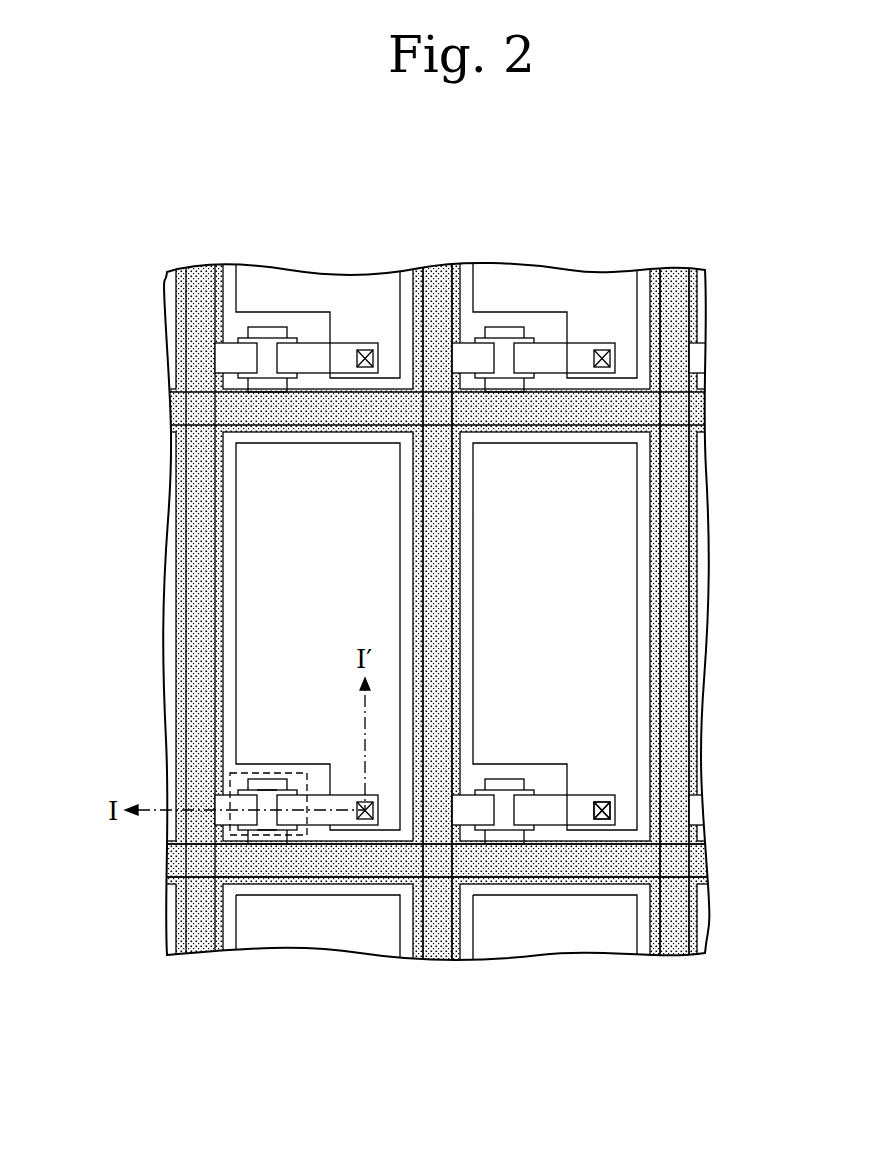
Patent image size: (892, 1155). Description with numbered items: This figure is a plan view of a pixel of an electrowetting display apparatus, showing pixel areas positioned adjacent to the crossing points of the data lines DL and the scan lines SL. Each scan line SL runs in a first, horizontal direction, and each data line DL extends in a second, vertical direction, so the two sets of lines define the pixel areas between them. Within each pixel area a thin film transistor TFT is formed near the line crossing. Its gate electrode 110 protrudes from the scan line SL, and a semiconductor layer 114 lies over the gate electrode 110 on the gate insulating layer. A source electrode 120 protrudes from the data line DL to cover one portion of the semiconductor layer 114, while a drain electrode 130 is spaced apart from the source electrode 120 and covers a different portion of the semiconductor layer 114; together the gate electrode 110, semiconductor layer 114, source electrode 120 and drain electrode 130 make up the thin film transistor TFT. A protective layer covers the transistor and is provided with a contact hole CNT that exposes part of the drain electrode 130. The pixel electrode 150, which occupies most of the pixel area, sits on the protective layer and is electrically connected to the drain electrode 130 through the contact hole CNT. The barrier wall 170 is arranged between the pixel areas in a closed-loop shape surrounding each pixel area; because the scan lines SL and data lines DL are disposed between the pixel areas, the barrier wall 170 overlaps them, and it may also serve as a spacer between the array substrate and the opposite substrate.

The gate electrode 110 is at (288, 818).
The semiconductor layer 114 is at (268, 820).
The source electrode 120 is at (246, 817).
The drain electrode 130 is at (319, 818).
The pixel electrode 150 is at (252, 562).
The barrier wall 170 is at (453, 955).
The contact hole CNT is at (603, 826).
The data line DL is at (672, 955).
The scan line SL is at (698, 862).
The thin film transistor TFT is at (422, 1017).